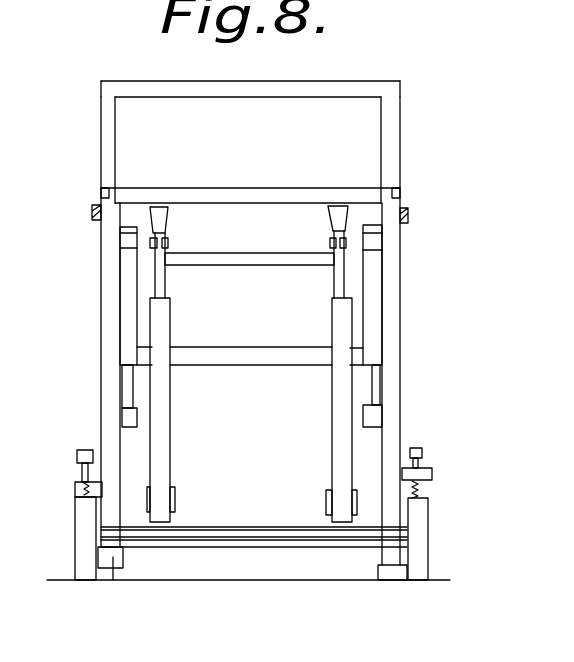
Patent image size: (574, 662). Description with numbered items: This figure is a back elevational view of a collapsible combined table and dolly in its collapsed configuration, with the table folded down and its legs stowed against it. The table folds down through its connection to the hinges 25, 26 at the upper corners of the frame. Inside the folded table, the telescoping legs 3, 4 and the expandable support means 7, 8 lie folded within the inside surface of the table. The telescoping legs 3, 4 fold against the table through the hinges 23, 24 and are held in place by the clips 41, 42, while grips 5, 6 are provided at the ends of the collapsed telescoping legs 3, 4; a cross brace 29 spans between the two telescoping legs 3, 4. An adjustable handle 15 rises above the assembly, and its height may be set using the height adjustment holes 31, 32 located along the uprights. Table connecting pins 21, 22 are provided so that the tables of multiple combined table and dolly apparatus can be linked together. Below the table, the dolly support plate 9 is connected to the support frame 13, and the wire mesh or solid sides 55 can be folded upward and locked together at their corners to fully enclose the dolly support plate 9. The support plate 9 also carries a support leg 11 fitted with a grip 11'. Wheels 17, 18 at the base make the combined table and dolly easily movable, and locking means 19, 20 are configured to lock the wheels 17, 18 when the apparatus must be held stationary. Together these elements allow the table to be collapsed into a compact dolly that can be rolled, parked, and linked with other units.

The adjustable handle 15 is at (115, 82).
The hinge 25 is at (100, 188).
The hinge 26 is at (402, 187).
The height adjustment hole 31 is at (96, 197).
The height adjustment hole 32 is at (408, 193).
The table connecting pin 21 is at (93, 212).
The table connecting pin 22 is at (407, 212).
The support frame 13 is at (112, 300).
The expandable support means 7 is at (130, 335).
The expandable support means 8 is at (382, 335).
The grip 5 is at (163, 207).
The grip 6 is at (339, 206).
The clip 41 is at (168, 242).
The clip 42 is at (330, 243).
The telescoping leg 3 is at (163, 282).
The telescoping leg 4 is at (338, 278).
The cross bar 29 is at (235, 265).
The hinge 23 is at (177, 498).
The hinge 24 is at (330, 498).
The dolly support plate 9 is at (252, 523).
The wire mesh or solid sides 55 is at (262, 545).
The wheel 17 is at (84, 567).
The wheel 18 is at (420, 530).
The locking means 19 is at (76, 473).
The locking means 20 is at (427, 473).
The support leg 11 is at (252, 590).
The grip 11' is at (114, 599).